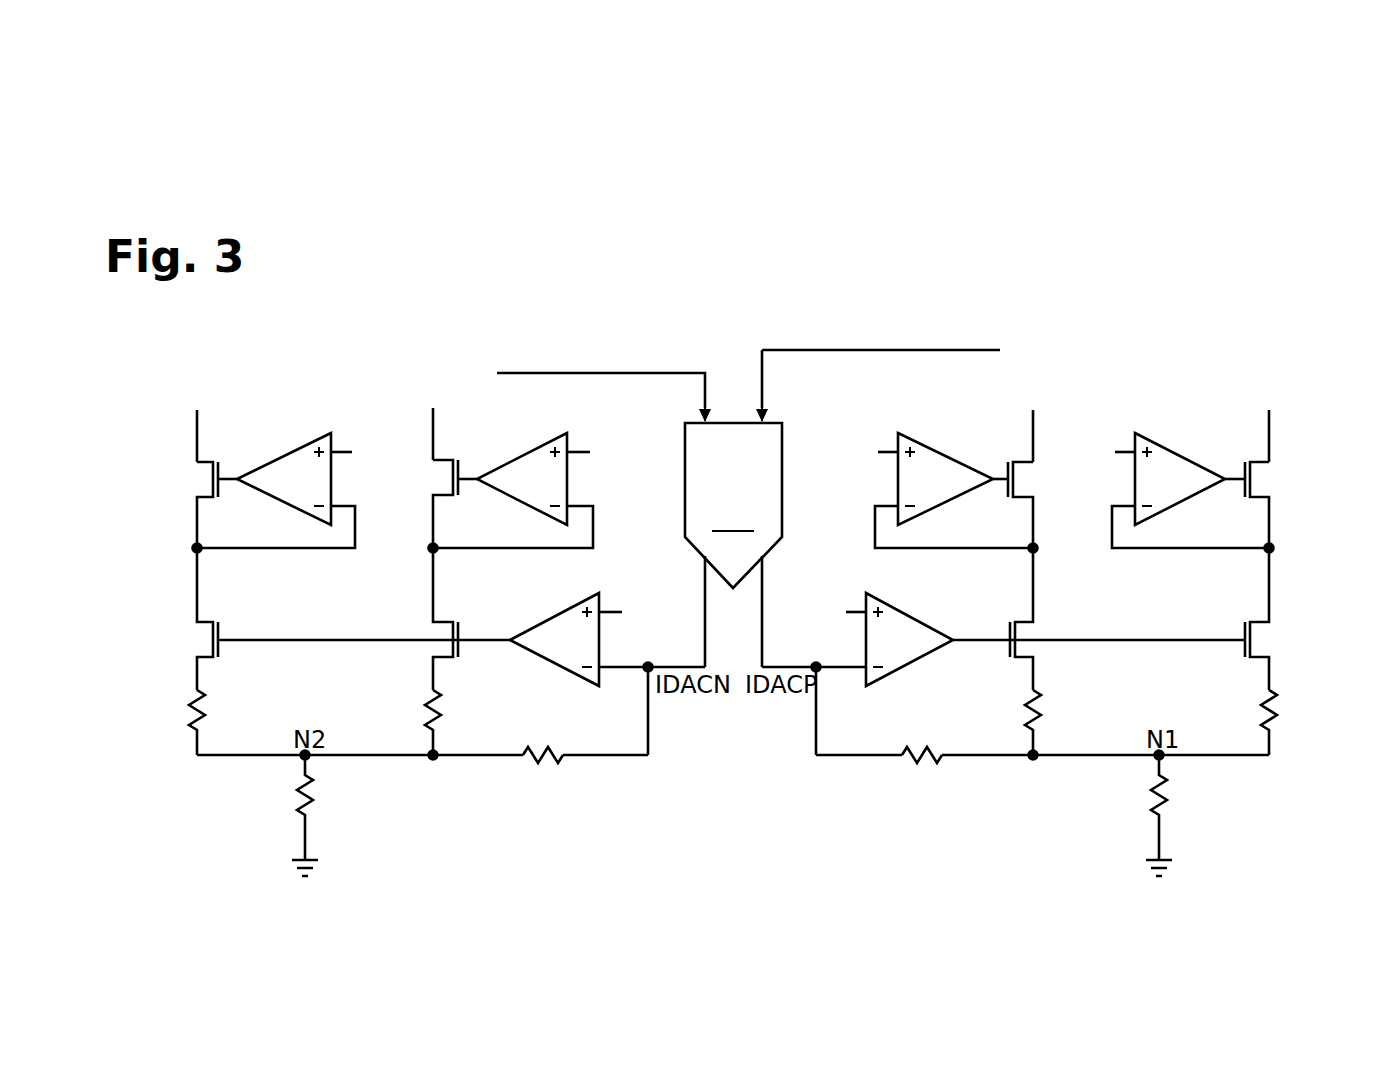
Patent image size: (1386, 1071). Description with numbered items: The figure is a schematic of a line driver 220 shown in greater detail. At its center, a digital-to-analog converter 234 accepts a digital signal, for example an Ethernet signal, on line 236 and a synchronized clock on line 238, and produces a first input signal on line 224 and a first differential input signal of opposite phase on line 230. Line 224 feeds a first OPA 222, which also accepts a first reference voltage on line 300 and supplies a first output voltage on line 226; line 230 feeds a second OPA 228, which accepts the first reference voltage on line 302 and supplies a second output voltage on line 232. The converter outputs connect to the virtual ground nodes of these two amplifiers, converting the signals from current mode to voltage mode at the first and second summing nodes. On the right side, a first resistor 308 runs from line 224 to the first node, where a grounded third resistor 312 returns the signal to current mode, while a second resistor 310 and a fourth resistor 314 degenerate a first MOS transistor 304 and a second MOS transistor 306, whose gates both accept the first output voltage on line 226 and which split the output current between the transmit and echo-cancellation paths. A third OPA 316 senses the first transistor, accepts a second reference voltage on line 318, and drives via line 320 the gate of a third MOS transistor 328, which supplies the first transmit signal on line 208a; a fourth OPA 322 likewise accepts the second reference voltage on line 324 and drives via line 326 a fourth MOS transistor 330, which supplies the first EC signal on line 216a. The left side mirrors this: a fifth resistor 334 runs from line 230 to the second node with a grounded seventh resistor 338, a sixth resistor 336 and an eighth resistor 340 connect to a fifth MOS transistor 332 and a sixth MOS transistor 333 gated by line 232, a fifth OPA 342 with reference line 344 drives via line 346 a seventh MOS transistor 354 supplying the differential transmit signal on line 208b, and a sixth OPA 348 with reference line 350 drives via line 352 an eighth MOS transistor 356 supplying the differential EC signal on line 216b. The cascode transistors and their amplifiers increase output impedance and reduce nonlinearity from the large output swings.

The line driver 220 is at (1183, 280).
The first differential EC signal line 216b is at (197, 432).
The first EC signal line 216a is at (1269, 432).
The first differential transmit signal line 208b is at (430, 418).
The first transmit signal line 208a is at (1038, 418).
The sixth OPA 348 is at (288, 455).
The second reference voltage input line of sixth OPA 350 is at (345, 452).
The output line of sixth OPA 352 is at (235, 482).
The eighth MOS transistor 356 is at (186, 490).
The fifth OPA 342 is at (526, 455).
The second reference voltage input line of fifth OPA 344 is at (583, 452).
The output line of fifth OPA 346 is at (475, 482).
The seventh MOS transistor 354 is at (424, 490).
The digital signal input line 236 is at (704, 404).
The clock input line 238 is at (764, 404).
The digital-to-analog converter 234 is at (733, 505).
The first differential input signal line 230 is at (705, 574).
The first input signal line 224 is at (762, 574).
The second OPA 228 is at (556, 618).
The first reference voltage input line of second OPA 302 is at (613, 612).
The second output voltage line 232 is at (488, 642).
The first reference voltage input line of first OPA 300 is at (853, 612).
The first OPA 222 is at (908, 618).
The first output voltage line 226 is at (981, 642).
The second reference voltage input line of third OPA 318 is at (884, 452).
The third OPA 316 is at (940, 454).
The output line of third OPA 320 is at (980, 482).
The third MOS transistor 328 is at (1043, 473).
The second reference voltage input line of fourth OPA 324 is at (1120, 452).
The fourth OPA 322 is at (1176, 454).
The output line of fourth OPA 326 is at (1233, 482).
The fourth MOS transistor 330 is at (1283, 474).
The sixth MOS transistor 333 is at (186, 650).
The fifth MOS transistor 332 is at (429, 650).
The eighth resistor 340 is at (208, 714).
The sixth resistor 336 is at (444, 714).
The seventh resistor 338 is at (318, 798).
The fifth resistor 334 is at (543, 764).
The second resistor 310 is at (1024, 712).
The first resistor 308 is at (916, 764).
The third resistor 312 is at (1148, 798).
The fourth resistor 314 is at (1258, 718).
The first MOS transistor 304 is at (1043, 634).
The second MOS transistor 306 is at (1283, 636).